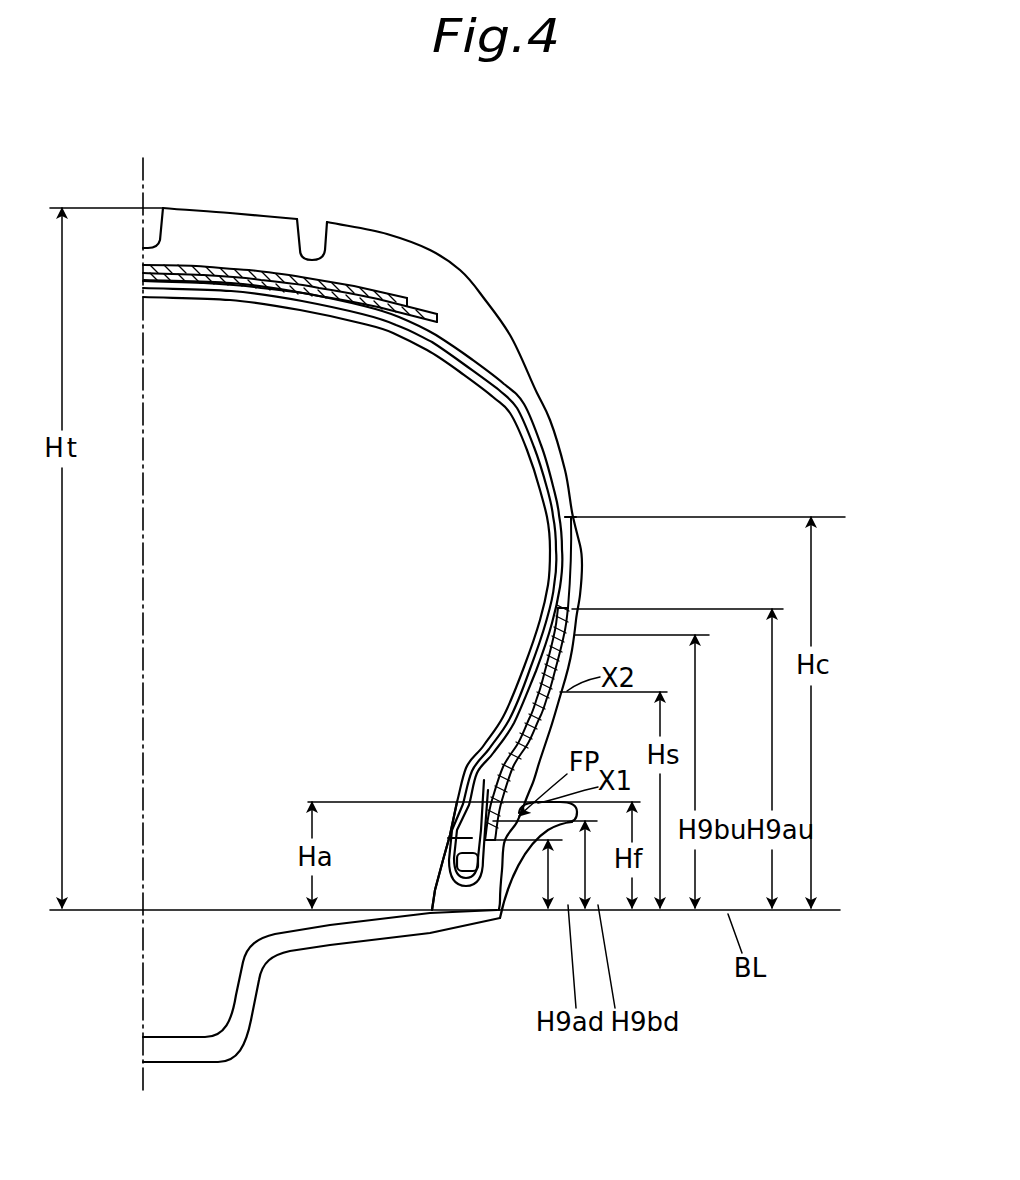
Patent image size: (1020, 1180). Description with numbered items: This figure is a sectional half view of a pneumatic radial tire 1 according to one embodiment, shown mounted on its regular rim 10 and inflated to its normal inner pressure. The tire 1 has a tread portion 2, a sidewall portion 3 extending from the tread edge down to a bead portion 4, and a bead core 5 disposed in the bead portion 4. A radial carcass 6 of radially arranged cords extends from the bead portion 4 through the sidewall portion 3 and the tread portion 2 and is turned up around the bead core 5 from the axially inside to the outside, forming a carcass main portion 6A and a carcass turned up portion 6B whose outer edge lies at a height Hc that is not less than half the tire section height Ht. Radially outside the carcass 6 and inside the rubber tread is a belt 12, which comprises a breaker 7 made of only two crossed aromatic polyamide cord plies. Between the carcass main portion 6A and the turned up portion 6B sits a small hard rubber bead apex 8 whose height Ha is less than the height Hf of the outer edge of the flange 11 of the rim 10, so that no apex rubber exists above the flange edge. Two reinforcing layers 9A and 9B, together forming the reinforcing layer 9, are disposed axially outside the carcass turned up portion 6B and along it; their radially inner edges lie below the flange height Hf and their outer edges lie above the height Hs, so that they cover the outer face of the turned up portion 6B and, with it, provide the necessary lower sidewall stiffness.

The tire 1 is at (533, 257).
The tread portion 2 is at (235, 198).
The sidewall portion 3 is at (592, 580).
The bead portion 4 is at (445, 800).
The bead core 5 is at (503, 905).
The radial carcass 6 is at (352, 583).
The carcass main portion 6A is at (515, 416).
The carcass turned up portion 6B is at (560, 553).
The breaker 7 is at (318, 234).
The bead apex 8 is at (460, 838).
The reinforcing layer 9 is at (459, 722).
The reinforcing layer 9A is at (553, 667).
The reinforcing layer 9B is at (547, 690).
The regular rim 10 is at (315, 950).
The rim flange 11 is at (560, 870).
The belt 12 is at (378, 268).